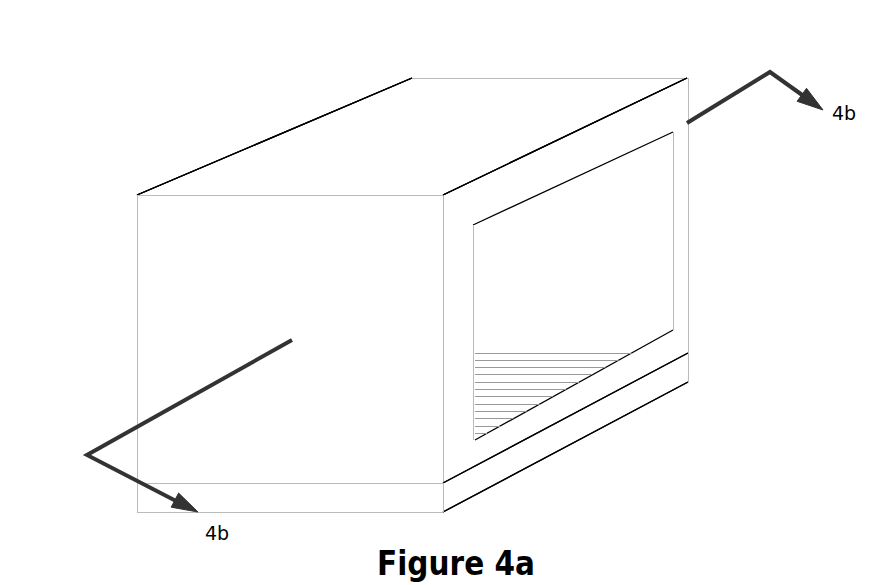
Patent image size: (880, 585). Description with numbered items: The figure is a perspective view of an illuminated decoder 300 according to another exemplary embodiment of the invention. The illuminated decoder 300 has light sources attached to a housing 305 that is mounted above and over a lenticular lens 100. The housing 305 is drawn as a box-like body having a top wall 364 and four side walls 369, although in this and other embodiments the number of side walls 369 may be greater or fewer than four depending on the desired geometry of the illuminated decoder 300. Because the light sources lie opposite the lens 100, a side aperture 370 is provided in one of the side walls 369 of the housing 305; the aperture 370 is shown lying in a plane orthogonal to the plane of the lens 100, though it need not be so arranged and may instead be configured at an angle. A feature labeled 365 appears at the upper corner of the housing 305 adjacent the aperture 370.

The illuminated decoder 300 is at (514, 45).
The housing 305 is at (225, 157).
The top wall 364 is at (378, 138).
The corner edge 365 is at (642, 123).
The side walls 369 is at (233, 312).
The side aperture 370 is at (673, 252).
The lenticular lens 100 is at (597, 430).